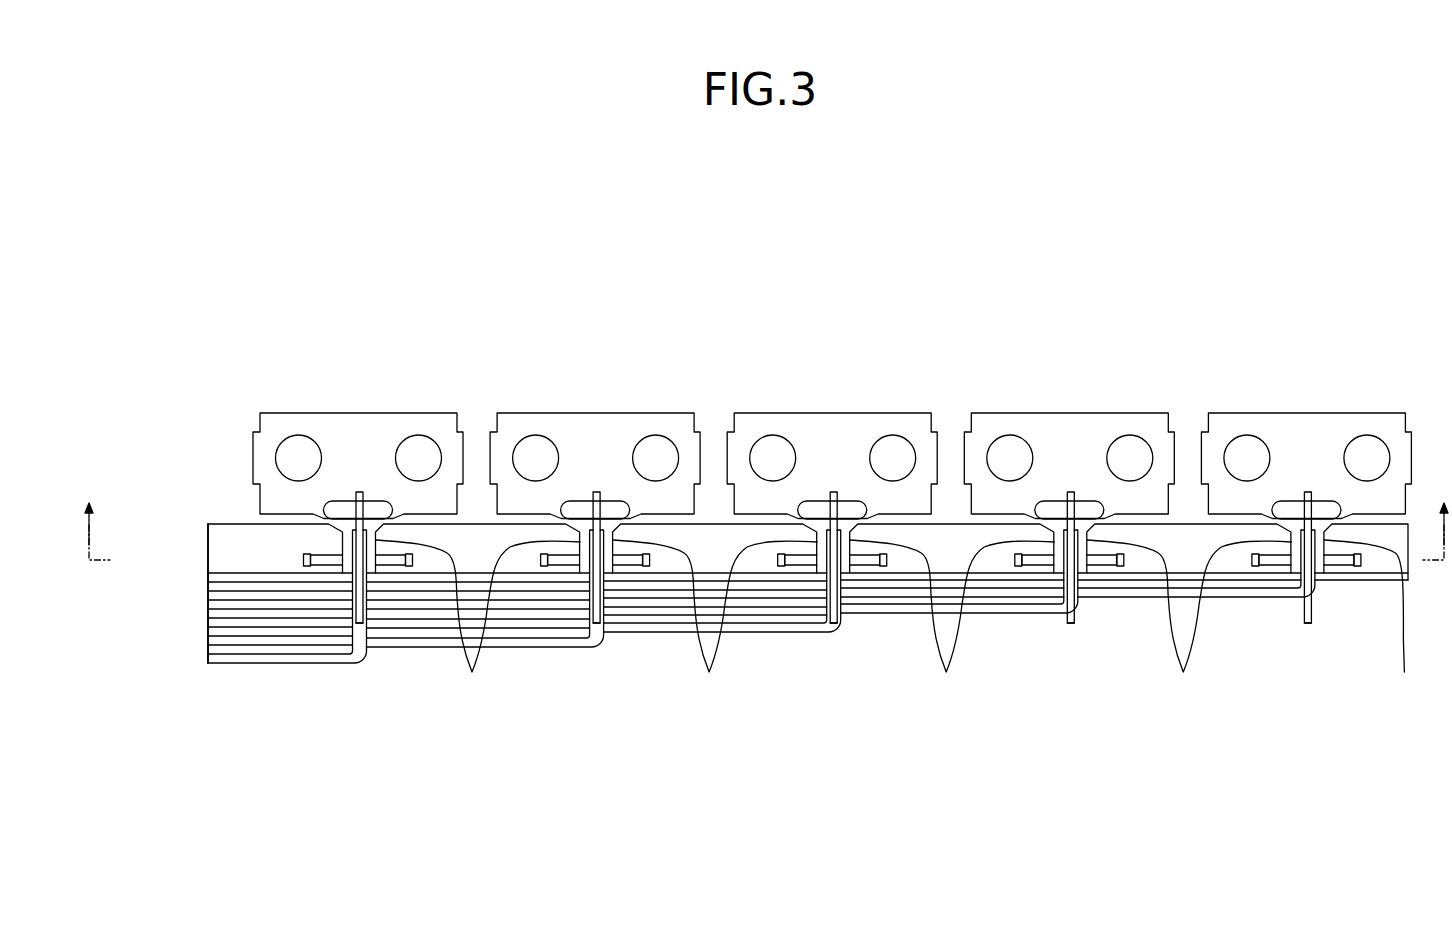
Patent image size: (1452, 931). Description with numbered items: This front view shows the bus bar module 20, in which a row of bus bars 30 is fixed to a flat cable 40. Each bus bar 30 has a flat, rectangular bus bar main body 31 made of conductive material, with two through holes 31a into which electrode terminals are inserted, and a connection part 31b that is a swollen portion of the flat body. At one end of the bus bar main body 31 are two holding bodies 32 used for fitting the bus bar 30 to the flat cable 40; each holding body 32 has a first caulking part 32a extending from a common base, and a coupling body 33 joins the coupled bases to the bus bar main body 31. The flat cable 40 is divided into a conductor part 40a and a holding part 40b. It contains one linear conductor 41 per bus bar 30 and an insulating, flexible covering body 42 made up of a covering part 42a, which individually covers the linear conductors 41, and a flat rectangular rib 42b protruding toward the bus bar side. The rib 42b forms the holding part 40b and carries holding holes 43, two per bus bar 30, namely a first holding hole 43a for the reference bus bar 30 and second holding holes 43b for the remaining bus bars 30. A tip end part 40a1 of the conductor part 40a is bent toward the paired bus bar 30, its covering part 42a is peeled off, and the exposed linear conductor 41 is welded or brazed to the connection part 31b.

The bus bar module 20 is at (833, 196).
The bus bar 30 is at (347, 331).
The bus bar main body 31 is at (258, 422).
The through hole 31a is at (297, 453).
The connection part 31b is at (373, 508).
The linear conductor 41 is at (348, 490).
The flat cable 40 is at (133, 530).
The conductor part 40a is at (196, 578).
The tip end part 40a1 is at (359, 627).
The holding part 40b is at (196, 529).
The covering body 42 is at (215, 592).
The covering part 42a is at (236, 656).
The rib 42b is at (243, 534).
The holding hole 43 is at (809, 670).
The first holding hole 43a is at (834, 669).
The second holding hole 43b is at (303, 560).
The holding body 32 is at (832, 647).
The first caulking part 32a is at (326, 558).
The coupling body 33 is at (900, 619).